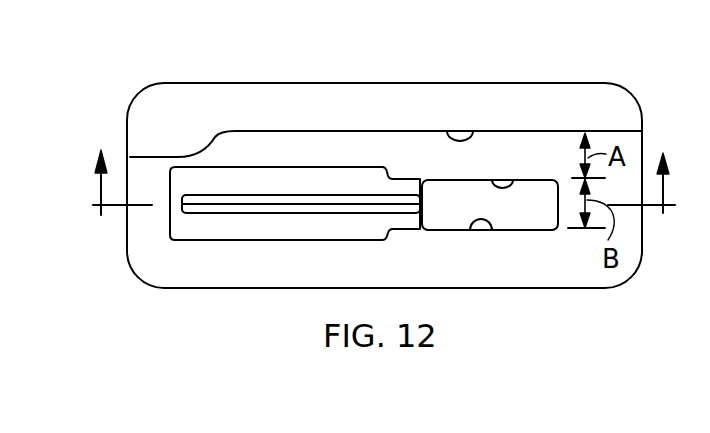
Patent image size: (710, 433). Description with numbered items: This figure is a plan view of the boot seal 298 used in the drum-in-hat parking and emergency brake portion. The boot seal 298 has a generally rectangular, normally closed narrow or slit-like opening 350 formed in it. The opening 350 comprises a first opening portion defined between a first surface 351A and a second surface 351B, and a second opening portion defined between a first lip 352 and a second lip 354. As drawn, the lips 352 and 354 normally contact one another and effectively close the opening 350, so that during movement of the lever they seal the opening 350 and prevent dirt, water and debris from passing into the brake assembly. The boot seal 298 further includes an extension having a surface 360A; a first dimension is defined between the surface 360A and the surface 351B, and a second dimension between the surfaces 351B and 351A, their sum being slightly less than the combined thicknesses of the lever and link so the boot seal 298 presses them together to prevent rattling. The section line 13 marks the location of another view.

The anchor body 298 is at (560, 312).
The channel 350 is at (352, 177).
The first recess block 351A is at (488, 220).
The second recess 351B is at (527, 180).
The slot 352 is at (260, 203).
The tube 354 is at (220, 207).
The notch 360A is at (476, 131).
The section line 13- 13 is at (386, 182).